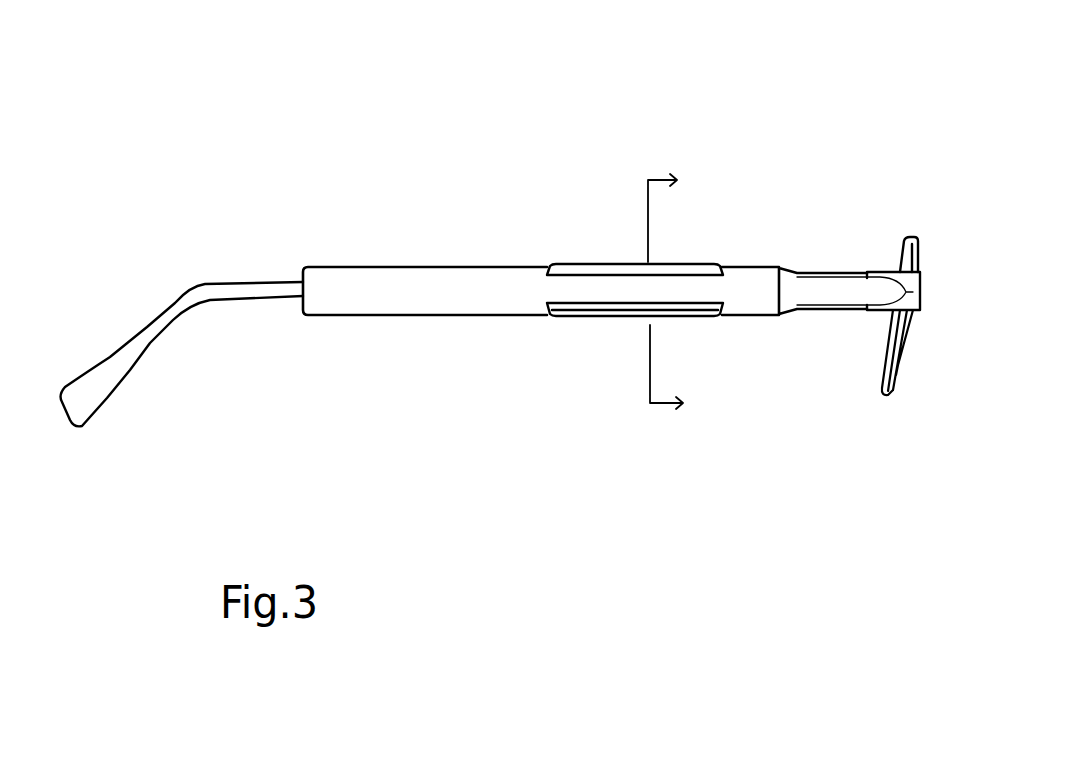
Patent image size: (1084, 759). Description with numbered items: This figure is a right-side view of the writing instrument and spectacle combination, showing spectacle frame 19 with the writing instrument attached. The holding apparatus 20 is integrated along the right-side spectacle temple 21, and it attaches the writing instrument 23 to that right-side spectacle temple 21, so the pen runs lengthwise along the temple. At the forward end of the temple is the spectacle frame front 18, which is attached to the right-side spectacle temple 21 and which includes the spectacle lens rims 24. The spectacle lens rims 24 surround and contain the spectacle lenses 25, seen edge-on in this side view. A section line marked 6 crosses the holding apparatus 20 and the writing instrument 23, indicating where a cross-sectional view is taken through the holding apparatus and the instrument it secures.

The spectacle frame 19 is at (428, 133).
The spectacle frame front 18 is at (915, 207).
The holding apparatus 20 is at (630, 265).
The right-side spectacle temple 21 is at (272, 290).
The writing instrument 23 is at (522, 303).
The spectacle lens rims 24 is at (883, 385).
The spectacle lenses 25 is at (907, 347).
The section line 6- 6 is at (676, 293).